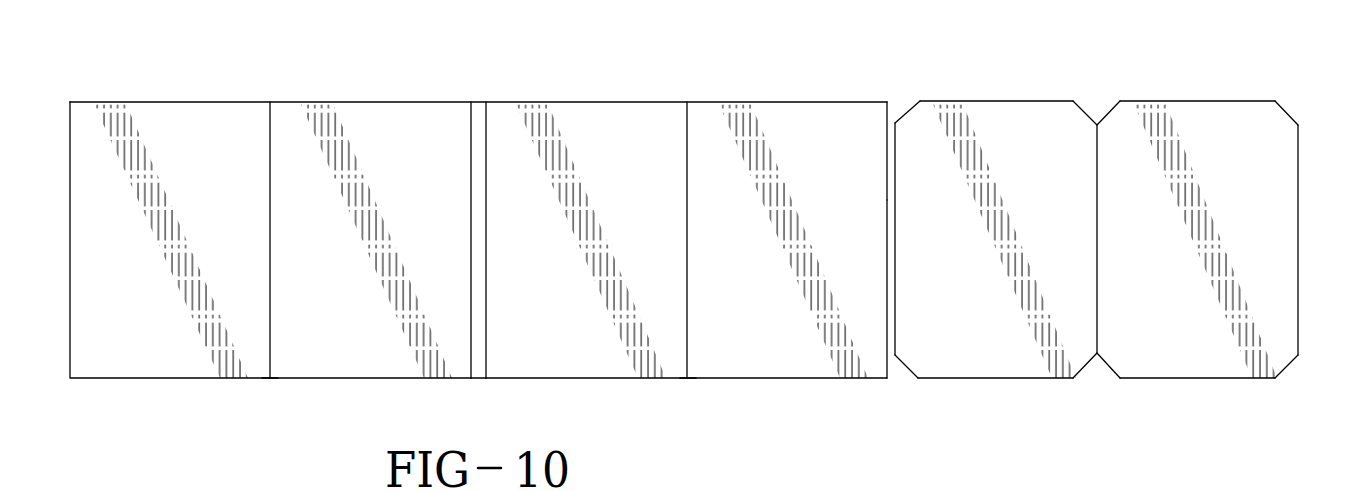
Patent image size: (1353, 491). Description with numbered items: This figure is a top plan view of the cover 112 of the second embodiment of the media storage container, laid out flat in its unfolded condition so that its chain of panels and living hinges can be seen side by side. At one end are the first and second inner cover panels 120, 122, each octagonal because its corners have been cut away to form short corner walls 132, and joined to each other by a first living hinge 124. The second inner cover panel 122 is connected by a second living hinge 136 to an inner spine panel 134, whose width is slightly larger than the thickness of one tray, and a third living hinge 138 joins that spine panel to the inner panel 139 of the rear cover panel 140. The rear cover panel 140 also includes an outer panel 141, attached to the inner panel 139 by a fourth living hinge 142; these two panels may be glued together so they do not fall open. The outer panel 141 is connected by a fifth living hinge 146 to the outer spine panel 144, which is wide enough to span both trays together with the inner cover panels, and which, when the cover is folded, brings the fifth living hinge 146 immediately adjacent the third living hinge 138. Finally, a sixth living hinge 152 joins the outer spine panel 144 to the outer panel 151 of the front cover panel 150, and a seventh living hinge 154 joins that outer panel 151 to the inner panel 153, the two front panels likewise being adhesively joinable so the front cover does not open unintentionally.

The cover 112 is at (352, 80).
The first inner cover panel 120 is at (1200, 123).
The second inner cover panel 122 is at (993, 123).
The first living hinge 124 is at (1097, 193).
The corner wall 132 is at (912, 108).
The inner spine panel 134 is at (887, 210).
The second living hinge 136 is at (895, 298).
The third living hinge 138 is at (887, 177).
The inner panel of rear cover panel 139 is at (795, 352).
The rear cover panel 140 is at (686, 391).
The outer panel of rear cover panel 141 is at (583, 353).
The fourth living hinge 142 is at (687, 192).
The outer spine panel 144 is at (471, 149).
The fifth living hinge 146 is at (486, 307).
The front cover panel 150 is at (258, 391).
The outer panel of front cover panel 151 is at (367, 353).
The sixth living hinge 152 is at (471, 181).
The inner panel of front cover panel 153 is at (152, 353).
The seventh living hinge 154 is at (270, 192).